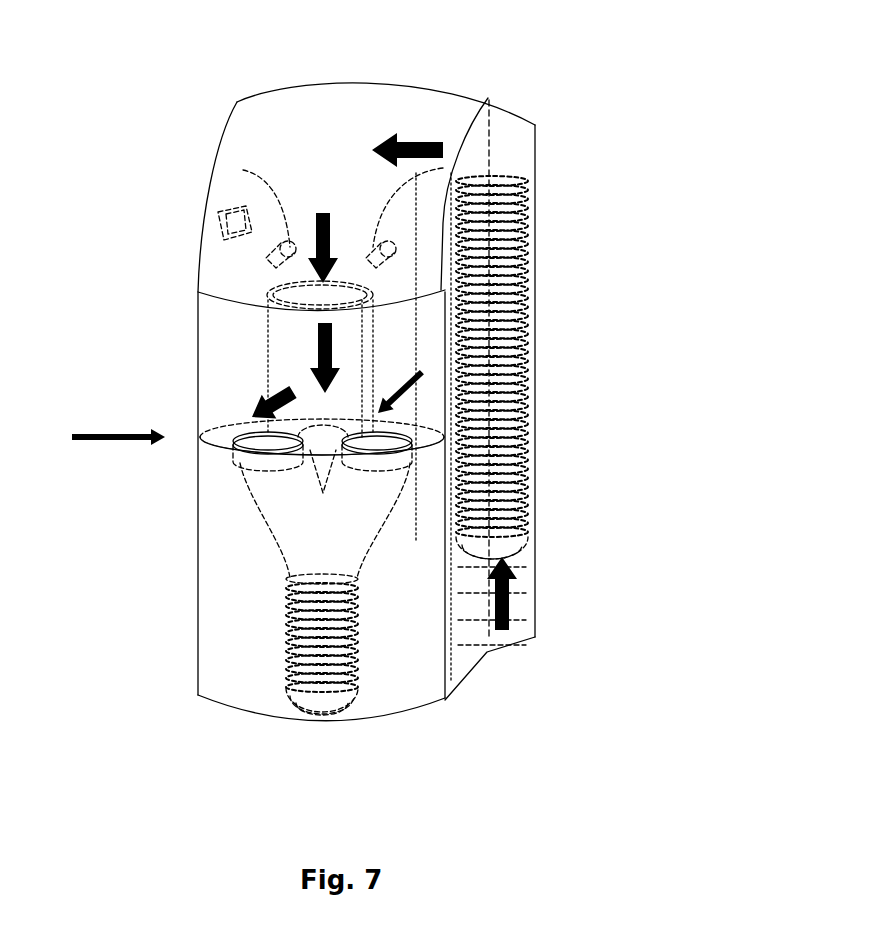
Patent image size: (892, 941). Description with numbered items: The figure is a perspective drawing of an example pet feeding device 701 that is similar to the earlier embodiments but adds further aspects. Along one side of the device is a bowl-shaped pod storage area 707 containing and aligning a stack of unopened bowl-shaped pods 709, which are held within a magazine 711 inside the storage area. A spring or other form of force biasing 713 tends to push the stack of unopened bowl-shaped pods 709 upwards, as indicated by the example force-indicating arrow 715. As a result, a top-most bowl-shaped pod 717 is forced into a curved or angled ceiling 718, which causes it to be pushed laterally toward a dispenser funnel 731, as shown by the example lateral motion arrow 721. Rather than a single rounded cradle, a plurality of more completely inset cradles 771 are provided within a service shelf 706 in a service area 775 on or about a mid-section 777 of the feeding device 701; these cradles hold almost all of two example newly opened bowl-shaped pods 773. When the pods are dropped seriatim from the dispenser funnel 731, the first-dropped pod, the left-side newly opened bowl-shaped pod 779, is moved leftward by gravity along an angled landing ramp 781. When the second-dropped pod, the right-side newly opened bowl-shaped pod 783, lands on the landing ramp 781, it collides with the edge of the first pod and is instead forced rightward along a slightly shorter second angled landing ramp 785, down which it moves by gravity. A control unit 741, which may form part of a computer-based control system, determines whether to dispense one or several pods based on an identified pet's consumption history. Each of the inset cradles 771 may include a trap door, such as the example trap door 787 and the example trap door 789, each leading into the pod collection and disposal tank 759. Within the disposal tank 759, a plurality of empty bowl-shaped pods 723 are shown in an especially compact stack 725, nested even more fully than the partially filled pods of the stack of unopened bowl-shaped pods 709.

The pet feeding device 701 is at (311, 443).
The service shelf 706 is at (200, 447).
The bowl-shaped pod storage area 707 is at (530, 543).
The stack of unopened bowl-shaped pods 709 is at (555, 356).
The magazine 711 is at (527, 593).
The force biasing 713 is at (518, 627).
The force-indicating arrow 715 is at (510, 575).
The top-most bowl-shaped pod 717 is at (527, 152).
The curved or angled ceiling 718 is at (490, 100).
The lateral motion arrow 721 is at (415, 148).
The empty bowl-shaped pods 723 is at (281, 558).
The compact stack 725 is at (255, 649).
The dispenser funnel 731 is at (287, 223).
The control unit 741 is at (218, 227).
The disposal tank 759 is at (377, 642).
The inset cradles 771 is at (200, 437).
The newly opened bowl-shaped pods 773 is at (252, 437).
The service area 775 is at (411, 389).
The mid-section 777 is at (101, 434).
The left-side newly opened bowl-shaped pod 779 is at (255, 447).
The angled landing ramp 781 is at (307, 433).
The right-side newly opened bowl-shaped pod 783 is at (362, 437).
The second angled landing ramp 785 is at (338, 430).
The trap door 787 is at (243, 465).
The trap door 789 is at (363, 453).